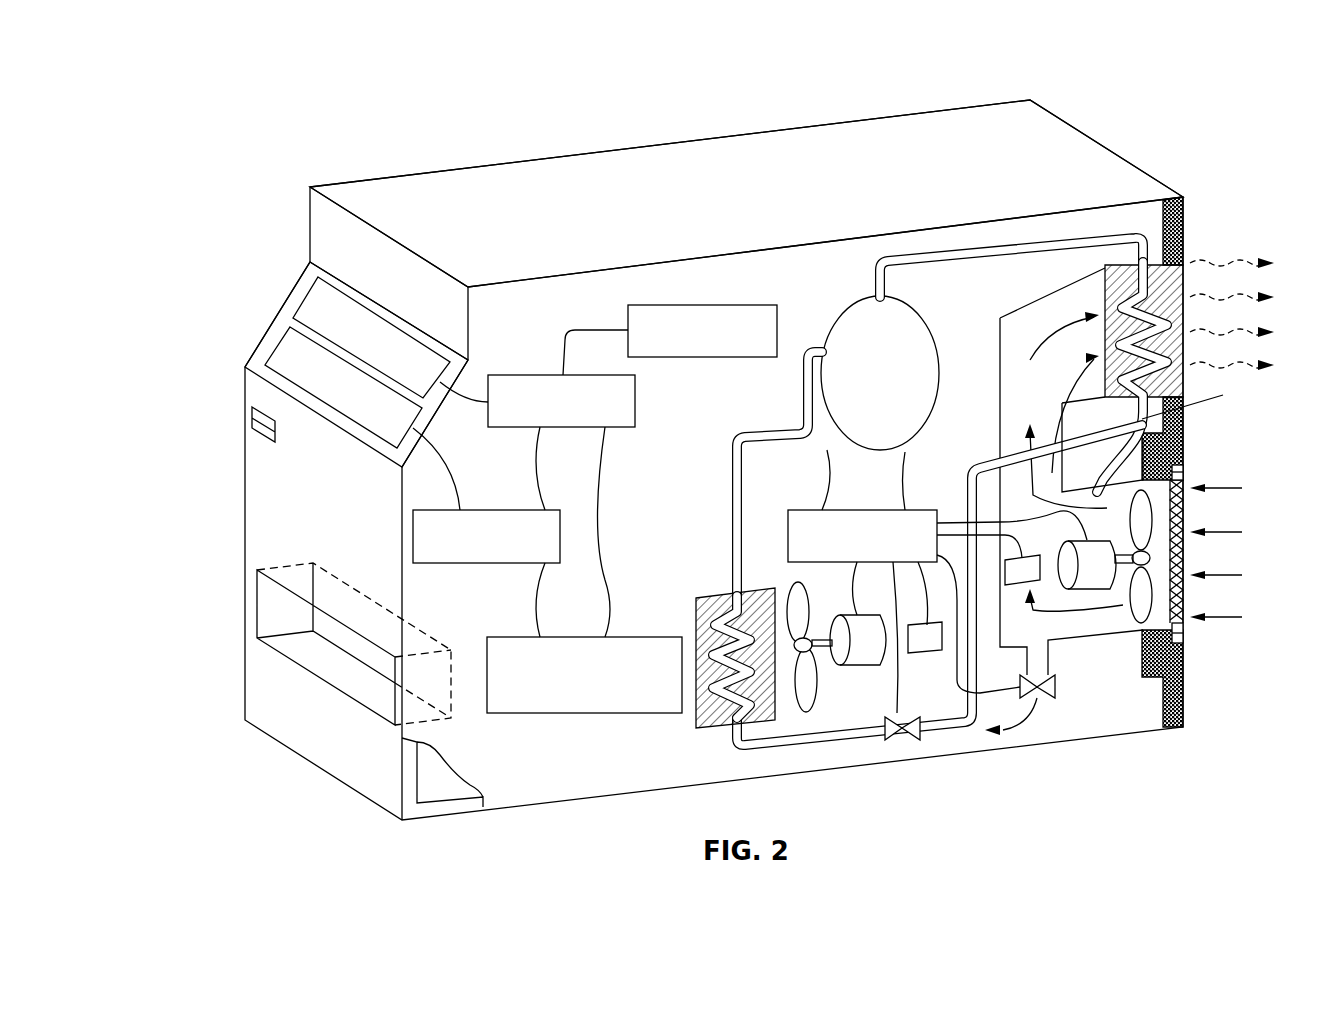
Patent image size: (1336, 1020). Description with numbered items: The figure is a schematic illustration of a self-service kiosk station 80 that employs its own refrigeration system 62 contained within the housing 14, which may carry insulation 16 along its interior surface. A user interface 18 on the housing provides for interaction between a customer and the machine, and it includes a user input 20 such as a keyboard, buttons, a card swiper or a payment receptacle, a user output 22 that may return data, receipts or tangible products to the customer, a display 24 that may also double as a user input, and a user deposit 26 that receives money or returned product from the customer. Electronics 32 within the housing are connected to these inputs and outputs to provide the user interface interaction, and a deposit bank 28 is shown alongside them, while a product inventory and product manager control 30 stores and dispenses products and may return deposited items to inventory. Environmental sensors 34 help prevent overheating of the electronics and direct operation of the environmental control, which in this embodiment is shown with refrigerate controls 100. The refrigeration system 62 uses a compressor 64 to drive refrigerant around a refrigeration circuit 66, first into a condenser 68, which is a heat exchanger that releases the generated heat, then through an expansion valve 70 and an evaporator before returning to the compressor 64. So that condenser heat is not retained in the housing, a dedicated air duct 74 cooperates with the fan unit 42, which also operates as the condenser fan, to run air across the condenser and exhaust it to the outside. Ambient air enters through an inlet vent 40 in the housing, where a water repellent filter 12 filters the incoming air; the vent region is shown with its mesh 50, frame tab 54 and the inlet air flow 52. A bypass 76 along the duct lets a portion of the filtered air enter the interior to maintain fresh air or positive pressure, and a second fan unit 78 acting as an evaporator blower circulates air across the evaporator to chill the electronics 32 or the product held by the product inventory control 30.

The vending machine 80 is at (226, 110).
The housing 14 is at (562, 183).
The user interface 18 is at (235, 285).
The user input 20 is at (312, 305).
The user deposit 26 is at (283, 362).
The display 24 is at (378, 325).
The user output 22 is at (325, 297).
The insulation 16 is at (447, 810).
The electronics 32 is at (517, 375).
The environmental sensors 34 is at (648, 305).
The deposit bank 28 is at (413, 537).
The product inventory and product manager control 30 is at (660, 713).
The refrigeration system 62 is at (817, 268).
The compressor 64 is at (907, 332).
The refrigeration circuit 66 is at (1017, 250).
The condenser 68 is at (1130, 287).
The air duct 74 is at (994, 548).
The expansion valve 70 is at (907, 742).
The bypass 76 is at (1040, 700).
The refrigerate controls 100 is at (788, 545).
The second fan unit 78 is at (855, 700).
The fan unit 42 is at (1087, 590).
The inlet vent 40 is at (1150, 630).
The air inlet vent 50 is at (1190, 617).
The vent frame 54 is at (1183, 633).
The ambient air flow 52 is at (1183, 503).
The water repellent filter 12 is at (1202, 474).